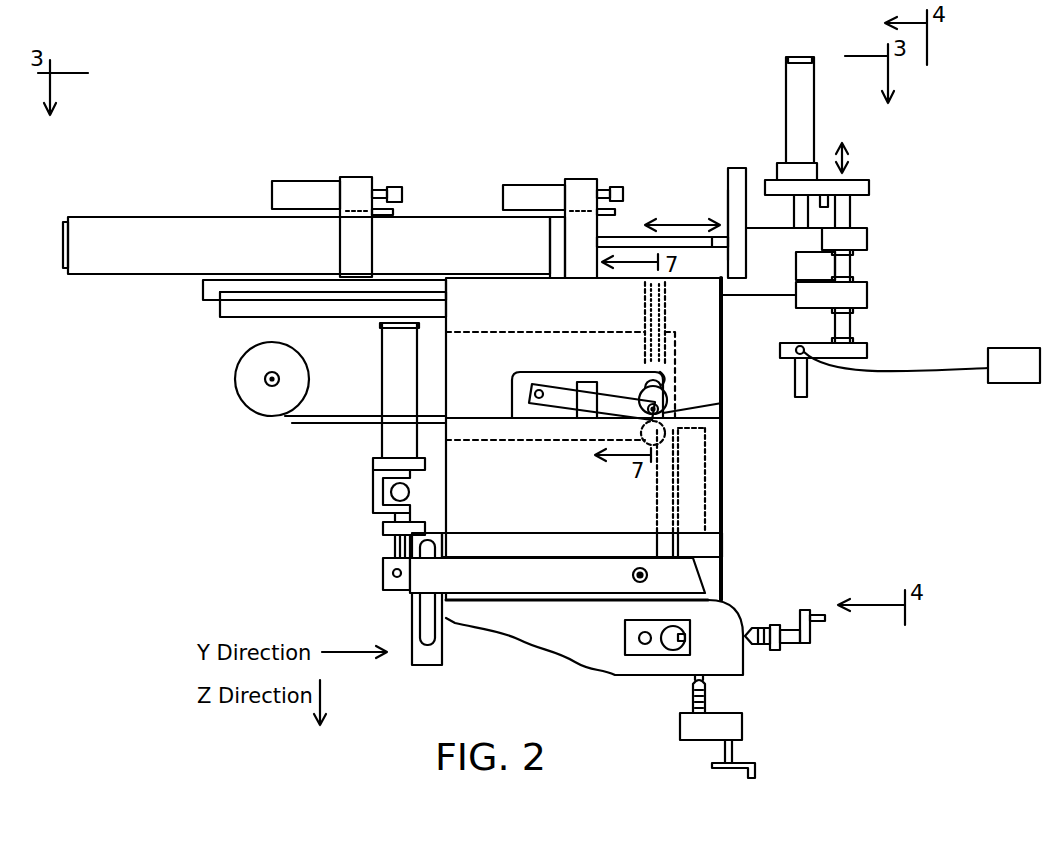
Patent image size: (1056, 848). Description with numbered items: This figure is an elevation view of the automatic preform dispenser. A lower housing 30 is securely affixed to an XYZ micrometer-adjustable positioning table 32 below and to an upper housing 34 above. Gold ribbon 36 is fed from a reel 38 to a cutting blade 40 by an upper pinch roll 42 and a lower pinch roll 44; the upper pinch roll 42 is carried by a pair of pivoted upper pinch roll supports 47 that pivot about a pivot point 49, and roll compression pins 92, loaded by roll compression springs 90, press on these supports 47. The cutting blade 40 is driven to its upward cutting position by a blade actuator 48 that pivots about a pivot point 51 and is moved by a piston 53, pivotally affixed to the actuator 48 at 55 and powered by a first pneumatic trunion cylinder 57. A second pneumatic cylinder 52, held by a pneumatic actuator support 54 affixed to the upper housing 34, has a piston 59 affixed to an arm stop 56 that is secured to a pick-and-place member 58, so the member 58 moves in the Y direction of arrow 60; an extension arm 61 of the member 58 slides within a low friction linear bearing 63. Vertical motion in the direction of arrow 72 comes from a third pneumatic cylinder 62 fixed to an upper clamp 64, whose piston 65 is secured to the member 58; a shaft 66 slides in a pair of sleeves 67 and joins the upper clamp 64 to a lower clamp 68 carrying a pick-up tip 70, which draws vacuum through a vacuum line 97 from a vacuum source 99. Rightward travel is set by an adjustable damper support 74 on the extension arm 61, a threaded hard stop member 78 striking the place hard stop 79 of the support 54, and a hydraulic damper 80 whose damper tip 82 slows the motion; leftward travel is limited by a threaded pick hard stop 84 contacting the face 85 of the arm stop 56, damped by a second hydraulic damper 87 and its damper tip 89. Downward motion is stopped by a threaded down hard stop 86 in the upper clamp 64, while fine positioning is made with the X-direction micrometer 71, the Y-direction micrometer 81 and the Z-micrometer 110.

The lower housing 30 is at (665, 440).
The XYZ micrometer-adjustable positioning table 32 is at (745, 652).
The upper housing 34 is at (725, 395).
The gold ribbon 36 is at (292, 421).
The reel 38 is at (252, 405).
The cutting blade 40 is at (712, 545).
The upper pinch roll 42 is at (667, 420).
The lower pinch roll 44 is at (700, 445).
The upper pinch roll supports 47 is at (530, 410).
The blade actuator 48 is at (708, 572).
The pivot point 49 is at (520, 388).
The pivot point 51 is at (632, 576).
The second pneumatic cylinder 52 is at (140, 217).
The piston 53 is at (392, 548).
The pneumatic actuator support 54 is at (580, 179).
The pivotal attachment point 55 is at (395, 590).
The arm stop 56 is at (737, 168).
The first pneumatic trunion cylinder 57 is at (382, 420).
The pick-and-place member 58 is at (773, 284).
The piston 59 is at (712, 280).
The arrow 60 is at (696, 222).
The extension arm 61 is at (203, 292).
The third pneumatic cylinder 62 is at (814, 111).
The low friction linear bearing 63 is at (250, 317).
The upper clamp 64 is at (869, 186).
The piston 65 is at (794, 212).
The shaft 66 is at (853, 325).
The sleeves 67 is at (838, 262).
The lower clamp 68 is at (869, 350).
The pick-up tip 70 is at (807, 385).
The X-direction micrometer 71 is at (625, 635).
The arrow 72 is at (845, 156).
The adjustable damper support 74 is at (365, 177).
The threaded hard stop member 78 is at (393, 212).
The place hard stop 79 is at (550, 240).
The hydraulic damper 80 is at (322, 181).
The Y-direction micrometer 81 is at (805, 640).
The damper tip 82 is at (396, 187).
The threaded pick hard stop 84 is at (615, 212).
The face 85 is at (728, 182).
The down hard stop 86 is at (852, 205).
The second hydraulic damper 87 is at (535, 185).
The damper tip 89 is at (616, 187).
The roll compression springs 90 is at (647, 318).
The roll compression pins 92 is at (662, 368).
The vacuum line 97 is at (902, 372).
The vacuum source 99 is at (1015, 383).
The Z-micrometer 110 is at (742, 735).